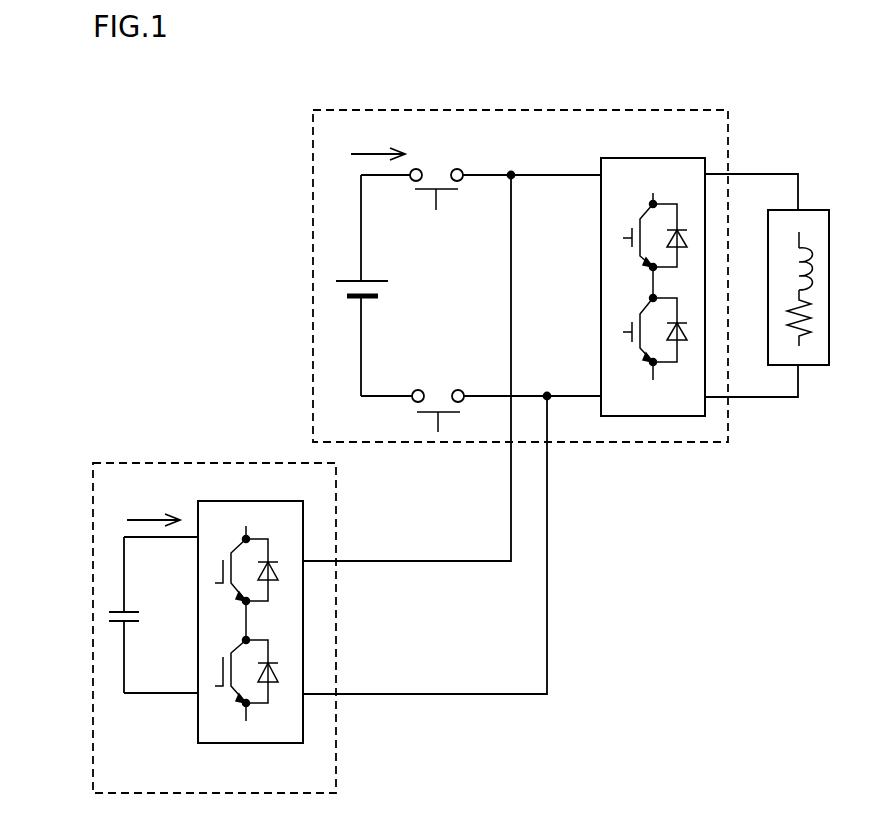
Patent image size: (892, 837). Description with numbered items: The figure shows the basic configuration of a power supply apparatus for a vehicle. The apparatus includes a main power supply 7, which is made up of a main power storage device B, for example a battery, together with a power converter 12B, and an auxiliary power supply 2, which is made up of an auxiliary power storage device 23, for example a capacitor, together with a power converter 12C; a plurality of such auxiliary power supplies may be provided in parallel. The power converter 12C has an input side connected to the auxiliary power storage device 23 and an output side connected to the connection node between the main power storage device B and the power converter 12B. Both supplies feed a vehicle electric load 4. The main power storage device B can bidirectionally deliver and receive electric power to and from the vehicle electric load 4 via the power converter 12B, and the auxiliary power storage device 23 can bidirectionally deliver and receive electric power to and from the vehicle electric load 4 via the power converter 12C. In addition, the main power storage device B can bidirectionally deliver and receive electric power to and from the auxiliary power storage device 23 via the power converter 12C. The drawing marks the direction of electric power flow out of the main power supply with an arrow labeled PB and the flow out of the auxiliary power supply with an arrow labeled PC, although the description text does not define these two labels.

The main power supply 7 is at (308, 232).
The main power storage device B is at (333, 289).
The battery power flow PB is at (370, 153).
The power converter 12B is at (660, 158).
The vehicle electric load 4 is at (812, 209).
The auxiliary power supply 2 is at (85, 522).
The auxiliary power storage device 23 is at (105, 616).
The capacitor power flow PC is at (145, 518).
The power converter 12C is at (252, 501).